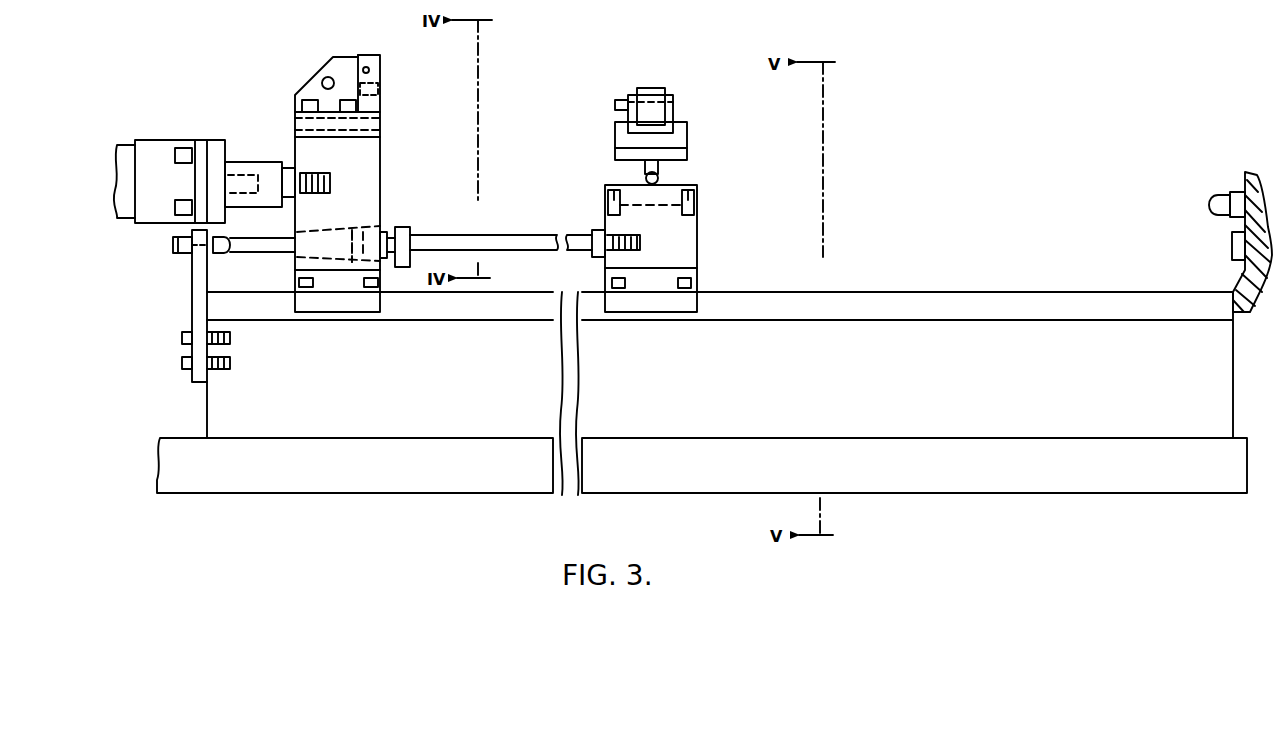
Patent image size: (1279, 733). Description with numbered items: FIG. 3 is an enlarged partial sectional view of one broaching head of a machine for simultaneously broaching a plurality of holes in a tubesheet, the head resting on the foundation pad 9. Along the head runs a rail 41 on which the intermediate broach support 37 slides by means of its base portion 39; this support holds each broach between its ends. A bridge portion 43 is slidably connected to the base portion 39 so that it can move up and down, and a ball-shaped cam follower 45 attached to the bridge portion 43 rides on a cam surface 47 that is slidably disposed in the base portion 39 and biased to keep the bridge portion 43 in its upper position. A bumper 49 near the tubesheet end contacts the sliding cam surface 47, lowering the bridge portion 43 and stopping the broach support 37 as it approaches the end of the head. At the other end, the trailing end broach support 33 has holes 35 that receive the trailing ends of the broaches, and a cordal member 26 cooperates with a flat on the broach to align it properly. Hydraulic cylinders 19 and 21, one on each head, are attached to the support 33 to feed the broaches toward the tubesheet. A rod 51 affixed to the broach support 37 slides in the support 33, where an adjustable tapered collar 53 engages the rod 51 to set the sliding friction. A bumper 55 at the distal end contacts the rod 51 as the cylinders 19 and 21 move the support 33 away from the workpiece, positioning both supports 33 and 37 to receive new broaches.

The foundation pad 9 is at (1218, 380).
The hydraulic cylinder 19 is at (222, 159).
The hydraulic cylinder 21 is at (148, 152).
The cordal member 26 is at (370, 68).
The trailing end broach support 33 is at (372, 145).
The holes 35 is at (368, 88).
The broach support 37 is at (695, 246).
The base portion 39 is at (690, 220).
The rail 41 is at (820, 302).
The bridge portion 43 is at (678, 138).
The ball-shaped cam follower 45 is at (660, 177).
The cam surface 47 is at (636, 205).
The bumper 49 is at (1207, 205).
The rod 51 is at (462, 240).
The adjustable tapered collar 53 is at (370, 245).
The bumper 55 is at (224, 250).